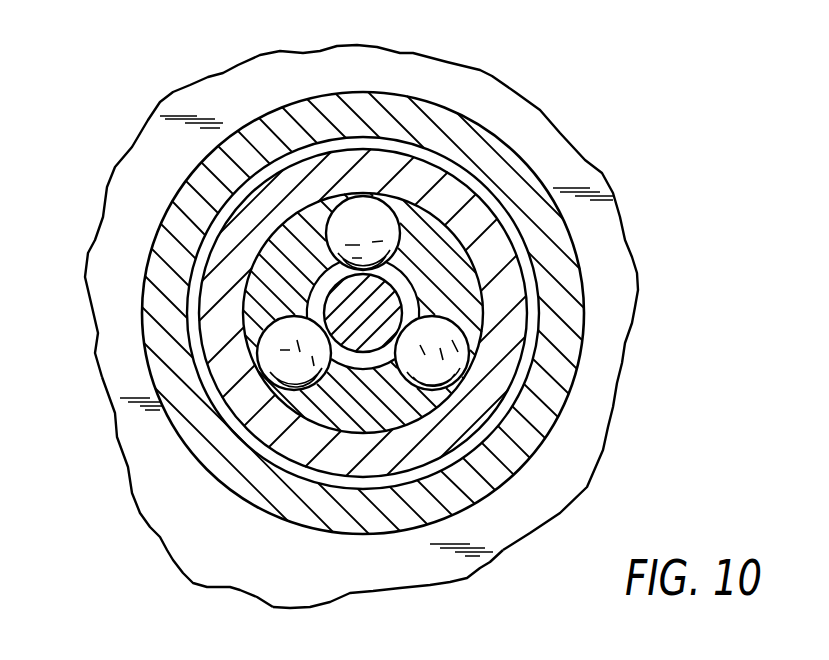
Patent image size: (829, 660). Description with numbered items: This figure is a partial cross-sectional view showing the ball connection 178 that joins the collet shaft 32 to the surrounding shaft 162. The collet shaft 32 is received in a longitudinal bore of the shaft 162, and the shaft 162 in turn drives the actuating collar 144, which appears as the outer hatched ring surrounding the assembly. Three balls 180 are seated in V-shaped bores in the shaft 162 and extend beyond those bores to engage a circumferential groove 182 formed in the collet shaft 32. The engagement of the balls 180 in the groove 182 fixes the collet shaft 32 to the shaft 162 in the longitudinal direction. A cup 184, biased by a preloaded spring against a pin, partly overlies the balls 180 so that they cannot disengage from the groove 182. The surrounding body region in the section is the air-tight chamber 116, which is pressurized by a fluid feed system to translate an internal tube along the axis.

The ball connection 178 is at (189, 58).
The air-tight chamber 116 is at (493, 535).
The actuating collar 144 is at (412, 117).
The shaft 162 is at (272, 258).
The cup 184 is at (304, 452).
The circumferential groove 182 is at (314, 306).
The balls 180 is at (354, 198).
The collet shaft 32 is at (400, 283).